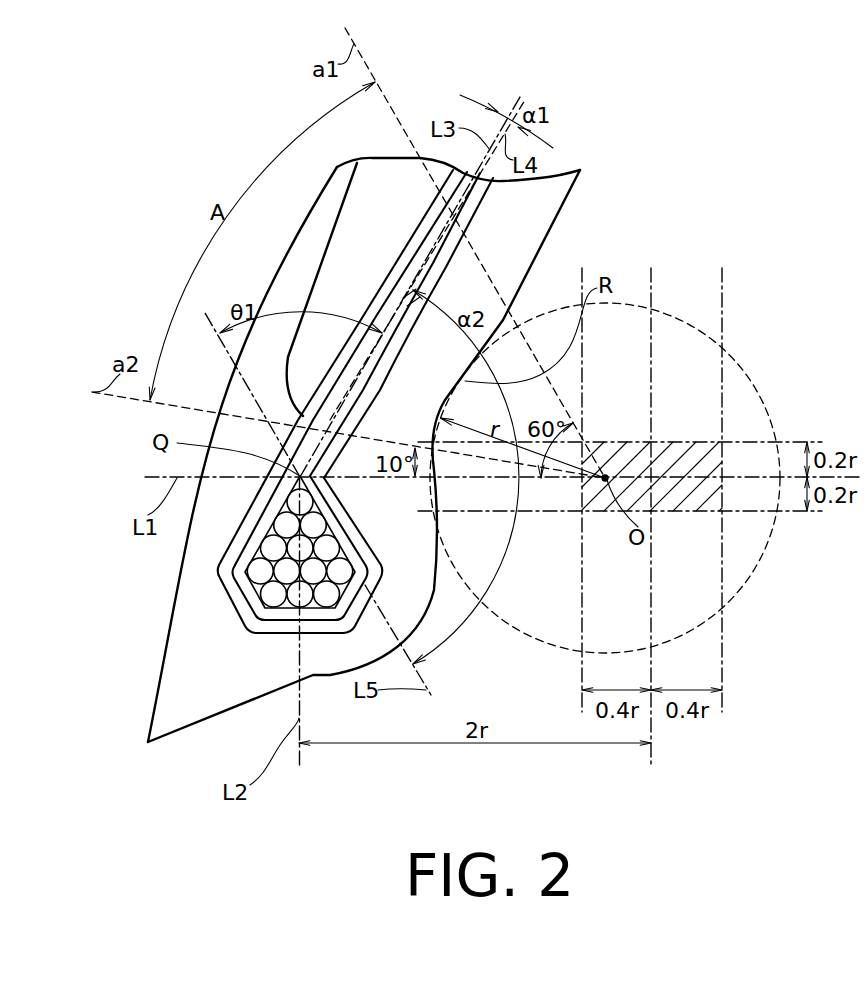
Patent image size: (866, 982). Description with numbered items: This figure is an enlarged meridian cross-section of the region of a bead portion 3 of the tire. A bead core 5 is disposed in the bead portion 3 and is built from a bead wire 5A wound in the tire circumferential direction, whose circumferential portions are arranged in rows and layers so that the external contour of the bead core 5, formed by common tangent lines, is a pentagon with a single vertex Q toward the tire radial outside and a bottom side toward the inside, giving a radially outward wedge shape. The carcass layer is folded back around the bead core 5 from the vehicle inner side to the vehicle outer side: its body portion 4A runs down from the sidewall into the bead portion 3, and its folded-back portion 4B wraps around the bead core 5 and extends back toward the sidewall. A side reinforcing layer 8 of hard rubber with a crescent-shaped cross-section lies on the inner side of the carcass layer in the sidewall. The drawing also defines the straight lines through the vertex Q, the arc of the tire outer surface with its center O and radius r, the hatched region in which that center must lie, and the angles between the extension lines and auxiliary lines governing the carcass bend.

The bead portion 3 is at (470, 658).
The body portion 4A is at (232, 543).
The folded-back portion 4B is at (358, 530).
The bead core 5 is at (221, 579).
The bead wire 5A is at (272, 571).
The side reinforcing layer 8 is at (360, 220).